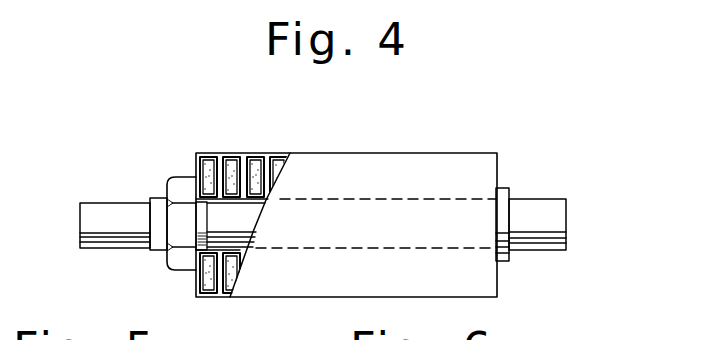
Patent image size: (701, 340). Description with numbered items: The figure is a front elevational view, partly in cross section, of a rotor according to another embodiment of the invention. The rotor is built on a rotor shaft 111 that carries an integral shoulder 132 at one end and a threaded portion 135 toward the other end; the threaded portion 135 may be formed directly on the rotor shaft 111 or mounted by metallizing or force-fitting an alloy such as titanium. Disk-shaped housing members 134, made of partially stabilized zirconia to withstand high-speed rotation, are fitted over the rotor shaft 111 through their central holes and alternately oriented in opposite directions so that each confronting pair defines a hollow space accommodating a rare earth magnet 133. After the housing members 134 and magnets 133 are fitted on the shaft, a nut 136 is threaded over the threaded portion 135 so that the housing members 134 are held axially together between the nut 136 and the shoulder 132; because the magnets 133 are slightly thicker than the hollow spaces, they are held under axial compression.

The rotor shaft 111 is at (548, 203).
The shoulder 132 is at (510, 188).
The magnets 133 is at (218, 155).
The housing members 134 is at (215, 297).
The threaded portion 135 is at (152, 251).
The nut 136 is at (182, 190).